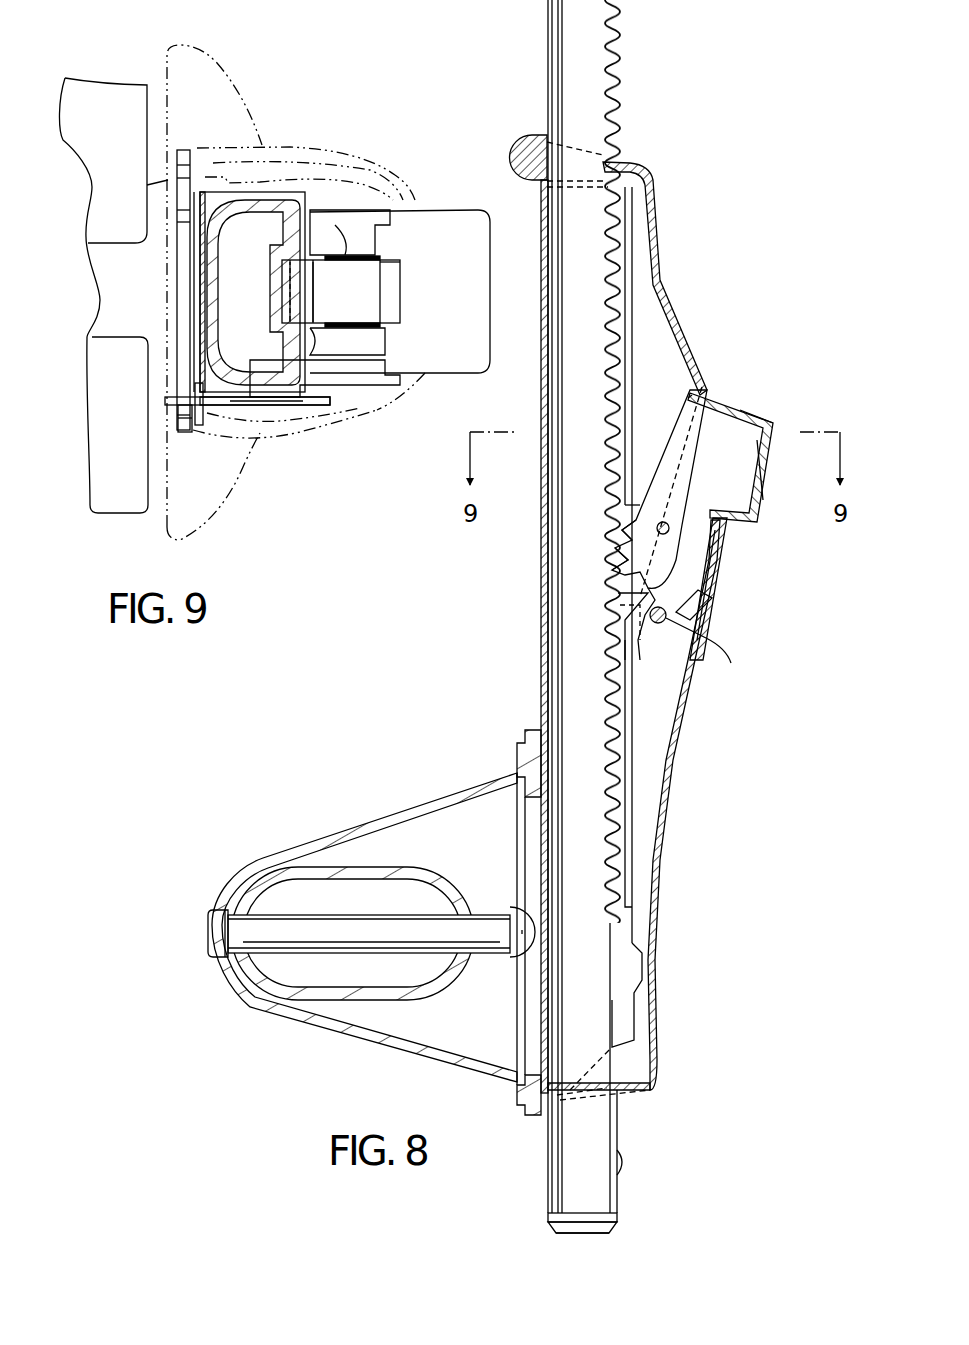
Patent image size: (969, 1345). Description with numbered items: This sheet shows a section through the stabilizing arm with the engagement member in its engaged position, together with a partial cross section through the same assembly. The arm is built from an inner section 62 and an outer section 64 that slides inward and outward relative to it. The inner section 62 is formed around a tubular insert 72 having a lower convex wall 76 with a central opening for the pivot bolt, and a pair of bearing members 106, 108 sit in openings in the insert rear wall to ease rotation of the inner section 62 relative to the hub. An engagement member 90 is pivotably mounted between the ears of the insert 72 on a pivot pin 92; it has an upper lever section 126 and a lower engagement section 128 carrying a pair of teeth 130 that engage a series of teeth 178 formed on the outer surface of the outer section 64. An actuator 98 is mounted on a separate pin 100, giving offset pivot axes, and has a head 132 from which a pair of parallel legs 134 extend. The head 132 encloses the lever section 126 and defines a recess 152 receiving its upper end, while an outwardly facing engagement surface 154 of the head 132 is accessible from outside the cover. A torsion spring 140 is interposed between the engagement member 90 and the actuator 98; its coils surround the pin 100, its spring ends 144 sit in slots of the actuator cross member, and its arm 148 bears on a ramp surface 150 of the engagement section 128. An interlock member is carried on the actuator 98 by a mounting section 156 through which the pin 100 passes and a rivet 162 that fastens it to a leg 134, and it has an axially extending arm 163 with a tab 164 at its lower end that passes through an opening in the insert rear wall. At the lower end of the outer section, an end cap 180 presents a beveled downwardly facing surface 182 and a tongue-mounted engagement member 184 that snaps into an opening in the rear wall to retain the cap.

In FIG. 8, the inner section 62 is at (700, 803).
In FIG. 8, the outer section 64 is at (535, 66).
In FIG. 9, the outer section 64 is at (207, 198).
In FIG. 9, the insert 72 is at (300, 405).
In FIG. 8, the lower convex wall 76 is at (505, 977).
In FIG. 8, the engagement member 90 is at (658, 492).
In FIG. 9, the engagement member 90 is at (370, 252).
In FIG. 8, the pivot pin 92 is at (661, 522).
In FIG. 9, the pivot pin 92 is at (326, 214).
In FIG. 8, the actuator 98 is at (760, 524).
In FIG. 8, the pin 100 is at (647, 625).
In FIG. 8, the bearing member 106 is at (528, 722).
In FIG. 8, the bearing member 108 is at (523, 1135).
In FIG. 8, the upper lever section 126 is at (703, 425).
In FIG. 9, the upper lever section 126 is at (390, 285).
In FIG. 8, the lower engagement section 128 is at (625, 530).
In FIG. 9, the lower engagement section 128 is at (313, 272).
In FIG. 8, the teeth 130 is at (614, 568).
In FIG. 9, the teeth 130 is at (290, 290).
In FIG. 8, the head 132 is at (730, 396).
In FIG. 9, the head 132 is at (465, 223).
In FIG. 8, the legs 134 is at (715, 535).
In FIG. 8, the torsion spring 140 is at (695, 638).
In FIG. 8, the spring ends 144 is at (700, 615).
In FIG. 8, the arm 148 is at (618, 621).
In FIG. 8, the ramp surface 150 is at (618, 596).
In FIG. 8, the recess 152 is at (688, 398).
In FIG. 9, the recess 152 is at (400, 310).
In FIG. 8, the engagement surface 154 is at (768, 460).
In FIG. 9, the mounting section 156 is at (385, 368).
In FIG. 9, the rivet 162 is at (347, 400).
In FIG. 9, the arm 163 is at (278, 405).
In FIG. 9, the tab 164 is at (165, 397).
In FIG. 8, the teeth 178 is at (612, 75).
In FIG. 8, the end cap 180 is at (615, 1238).
In FIG. 8, the beveled surface 182 is at (547, 1232).
In FIG. 8, the engagement member 184 is at (625, 1162).